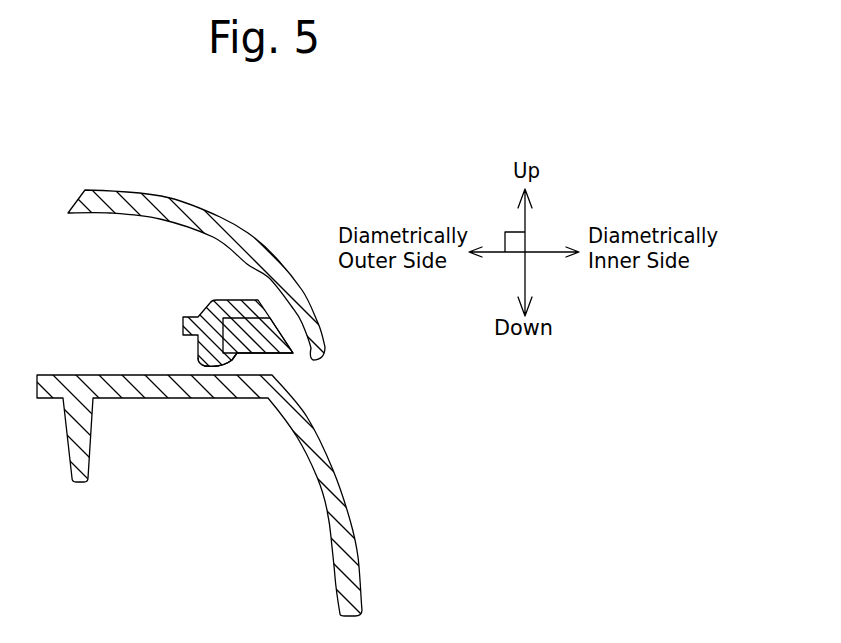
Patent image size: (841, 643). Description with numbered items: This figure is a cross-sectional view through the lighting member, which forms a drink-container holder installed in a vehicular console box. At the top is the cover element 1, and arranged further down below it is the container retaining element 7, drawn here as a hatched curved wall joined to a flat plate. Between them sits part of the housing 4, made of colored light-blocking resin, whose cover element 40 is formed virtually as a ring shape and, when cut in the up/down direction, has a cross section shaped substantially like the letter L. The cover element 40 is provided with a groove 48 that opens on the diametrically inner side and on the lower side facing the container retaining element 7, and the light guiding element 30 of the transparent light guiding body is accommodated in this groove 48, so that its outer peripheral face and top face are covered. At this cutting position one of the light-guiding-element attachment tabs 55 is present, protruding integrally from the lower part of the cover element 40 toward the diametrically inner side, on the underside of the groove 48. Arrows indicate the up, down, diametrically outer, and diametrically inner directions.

The cover element 1 is at (123, 190).
The housing 4 is at (218, 323).
The cover element 40 is at (251, 323).
The groove 48 is at (245, 326).
The light guiding element 30 is at (302, 297).
The light-guiding-element attachment tabs 55 is at (233, 358).
The container retaining element 7 is at (338, 532).